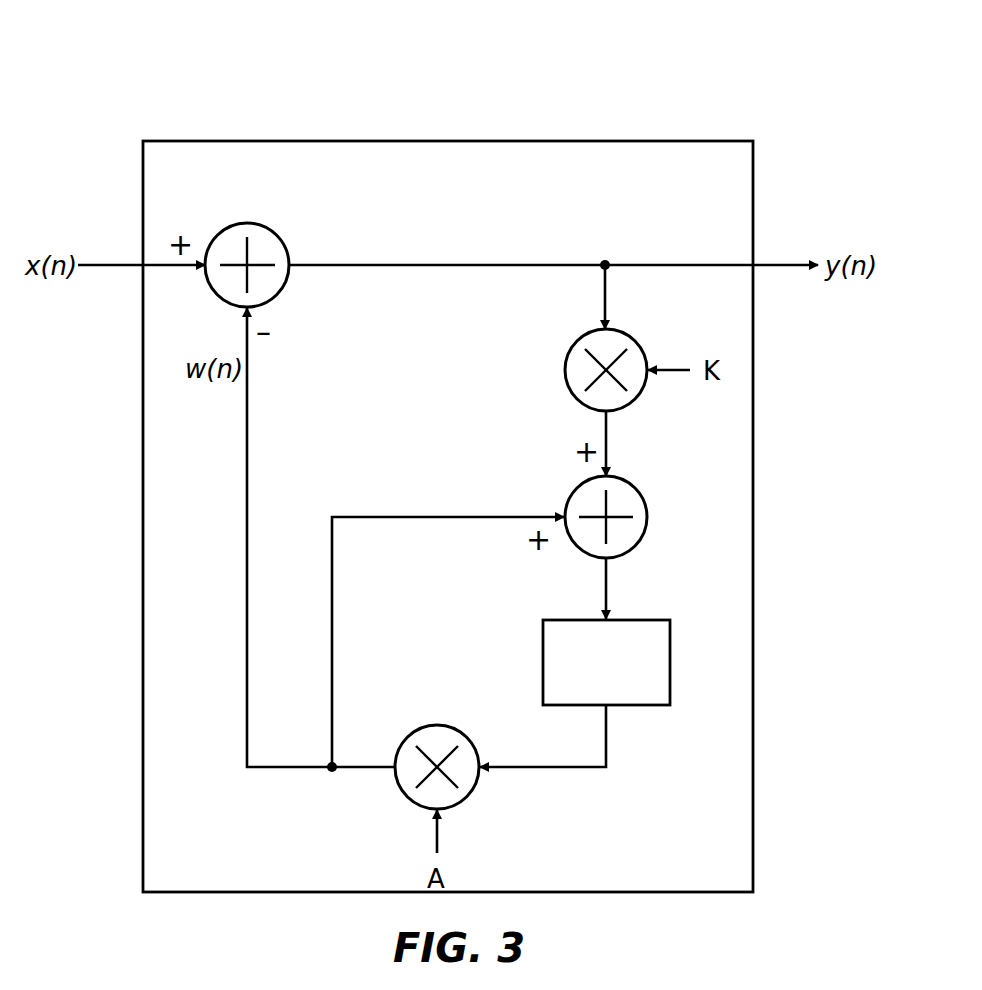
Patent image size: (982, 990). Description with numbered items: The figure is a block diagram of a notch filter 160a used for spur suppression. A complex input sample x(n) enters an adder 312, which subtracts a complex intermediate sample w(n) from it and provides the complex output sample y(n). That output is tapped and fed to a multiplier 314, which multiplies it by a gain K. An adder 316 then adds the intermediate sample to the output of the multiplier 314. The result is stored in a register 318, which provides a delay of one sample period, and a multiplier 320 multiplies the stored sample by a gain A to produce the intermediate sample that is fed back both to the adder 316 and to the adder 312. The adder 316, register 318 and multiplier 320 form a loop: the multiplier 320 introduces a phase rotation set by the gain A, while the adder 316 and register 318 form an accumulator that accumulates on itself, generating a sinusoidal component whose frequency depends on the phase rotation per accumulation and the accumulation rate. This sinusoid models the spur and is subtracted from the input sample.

The notch filter 160a is at (428, 141).
The adder 312 is at (254, 210).
The multiplier 314 is at (566, 380).
The adder 316 is at (647, 519).
The register 318 is at (644, 620).
The multiplier 320 is at (431, 726).